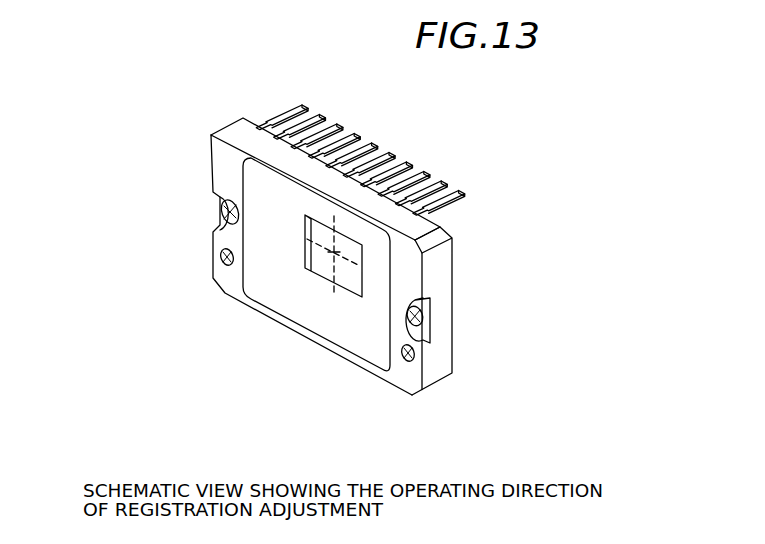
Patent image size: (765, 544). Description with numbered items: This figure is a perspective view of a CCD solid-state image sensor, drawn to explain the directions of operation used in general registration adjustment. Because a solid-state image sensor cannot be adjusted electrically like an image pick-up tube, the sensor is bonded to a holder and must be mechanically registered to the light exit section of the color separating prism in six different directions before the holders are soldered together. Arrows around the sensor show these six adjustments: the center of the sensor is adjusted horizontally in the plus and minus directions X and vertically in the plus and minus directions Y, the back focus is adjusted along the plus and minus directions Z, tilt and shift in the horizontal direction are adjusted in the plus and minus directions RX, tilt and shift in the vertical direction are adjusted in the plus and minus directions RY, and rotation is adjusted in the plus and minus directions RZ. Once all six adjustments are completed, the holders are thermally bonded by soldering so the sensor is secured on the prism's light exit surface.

The horizontal adjustment directions X is at (212, 192).
The vertical adjustment directions Y is at (334, 168).
The back focus adjustment directions Z is at (456, 185).
The horizontal tilt and shift adjustment directions RX is at (257, 390).
The vertical tilt and shift adjustment directions RY is at (188, 447).
The rotation adjustment directions RZ is at (470, 220).